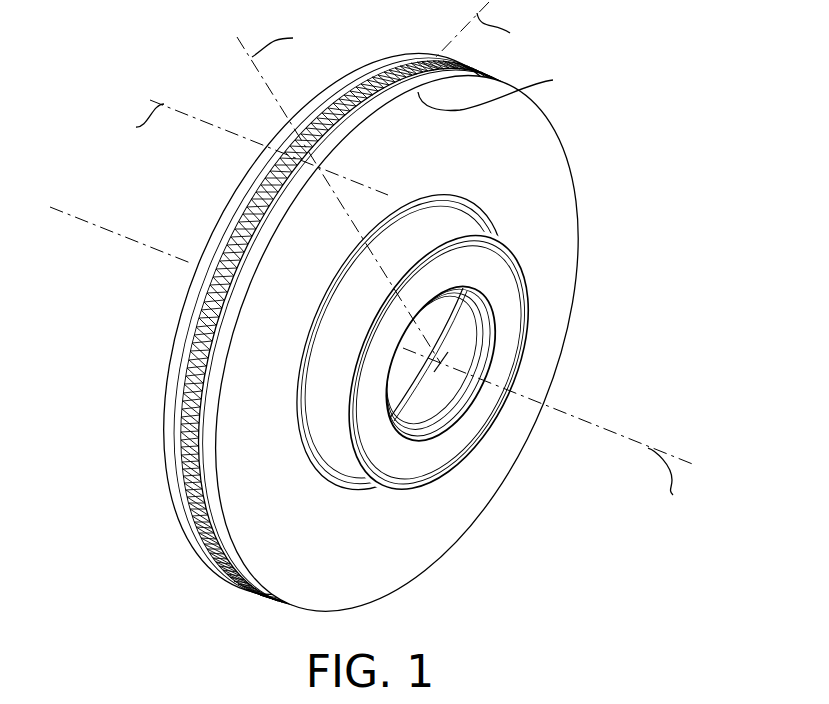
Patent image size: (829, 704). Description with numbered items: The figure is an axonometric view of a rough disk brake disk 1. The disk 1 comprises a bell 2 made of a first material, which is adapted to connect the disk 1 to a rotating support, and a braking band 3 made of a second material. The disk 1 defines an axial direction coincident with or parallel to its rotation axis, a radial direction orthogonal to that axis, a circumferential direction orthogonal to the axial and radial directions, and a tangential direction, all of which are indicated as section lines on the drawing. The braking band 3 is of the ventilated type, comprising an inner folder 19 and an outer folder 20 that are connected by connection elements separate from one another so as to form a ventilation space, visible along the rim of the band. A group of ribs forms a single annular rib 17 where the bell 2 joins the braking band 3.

The disk brake disk 1 is at (388, 332).
The bell 2 is at (374, 342).
The braking band 3 is at (375, 332).
The single annular rib 17 is at (297, 380).
The inner folder 19 is at (188, 316).
The outer folder 20 is at (232, 463).